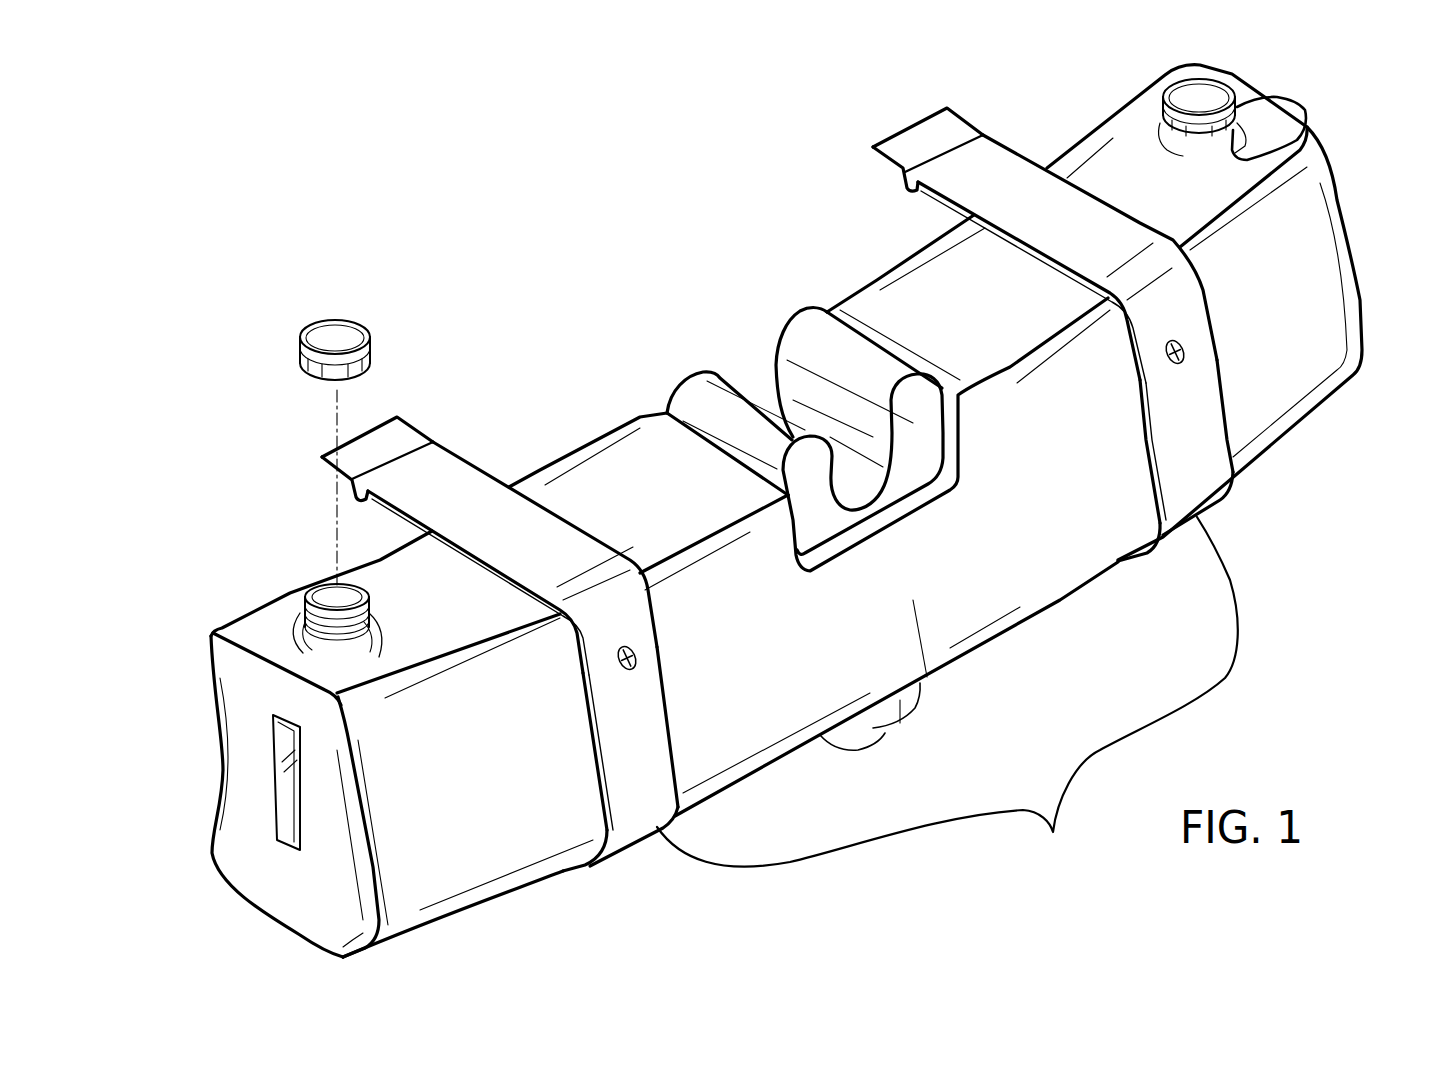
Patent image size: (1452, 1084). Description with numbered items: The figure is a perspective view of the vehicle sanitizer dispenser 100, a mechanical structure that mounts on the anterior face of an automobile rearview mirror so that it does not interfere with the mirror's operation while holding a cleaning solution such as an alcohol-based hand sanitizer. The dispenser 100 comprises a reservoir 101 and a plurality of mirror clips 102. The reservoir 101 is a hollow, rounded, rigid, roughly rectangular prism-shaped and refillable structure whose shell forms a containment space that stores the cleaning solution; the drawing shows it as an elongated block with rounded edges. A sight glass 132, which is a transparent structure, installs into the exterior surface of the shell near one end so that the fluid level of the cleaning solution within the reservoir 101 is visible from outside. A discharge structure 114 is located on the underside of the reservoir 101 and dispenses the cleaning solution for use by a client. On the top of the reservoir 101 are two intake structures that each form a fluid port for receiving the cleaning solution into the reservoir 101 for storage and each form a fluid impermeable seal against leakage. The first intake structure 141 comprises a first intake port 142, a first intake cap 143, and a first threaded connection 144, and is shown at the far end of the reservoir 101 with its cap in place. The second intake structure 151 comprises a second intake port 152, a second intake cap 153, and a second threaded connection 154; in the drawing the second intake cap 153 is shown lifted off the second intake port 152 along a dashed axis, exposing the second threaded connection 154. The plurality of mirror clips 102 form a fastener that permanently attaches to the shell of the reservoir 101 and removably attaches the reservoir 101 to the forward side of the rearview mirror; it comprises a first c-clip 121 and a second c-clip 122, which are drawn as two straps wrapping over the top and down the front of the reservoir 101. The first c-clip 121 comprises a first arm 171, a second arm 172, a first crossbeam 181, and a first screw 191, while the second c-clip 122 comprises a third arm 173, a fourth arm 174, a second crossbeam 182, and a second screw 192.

The vehicle sanitizer dispenser 100 is at (261, 190).
The reservoir 101 is at (990, 633).
The plurality of mirror clips 102 is at (947, 697).
The discharge structure 114 is at (880, 737).
The first c-clip 121 is at (897, 113).
The second c-clip 122 is at (440, 435).
The sight glass 132 is at (282, 823).
The first intake structure 141 is at (1257, 80).
The first intake port 142 is at (1306, 140).
The first intake cap 143 is at (1197, 90).
The first threaded connection 144 is at (1297, 99).
The second intake structure 151 is at (277, 480).
The second intake port 152 is at (328, 607).
The second intake cap 153 is at (327, 337).
The second threaded connection 154 is at (369, 620).
The first arm 171 is at (1003, 177).
The second arm 172 is at (1139, 568).
The third arm 173 is at (520, 515).
The fourth arm 174 is at (601, 878).
The first crossbeam 181 is at (1200, 393).
The second crossbeam 182 is at (650, 700).
The first screw 191 is at (1187, 343).
The second screw 192 is at (640, 650).